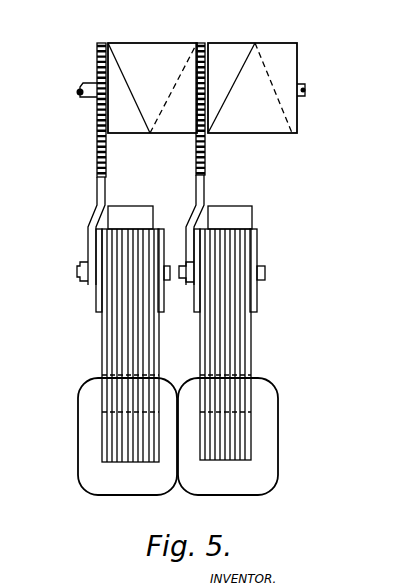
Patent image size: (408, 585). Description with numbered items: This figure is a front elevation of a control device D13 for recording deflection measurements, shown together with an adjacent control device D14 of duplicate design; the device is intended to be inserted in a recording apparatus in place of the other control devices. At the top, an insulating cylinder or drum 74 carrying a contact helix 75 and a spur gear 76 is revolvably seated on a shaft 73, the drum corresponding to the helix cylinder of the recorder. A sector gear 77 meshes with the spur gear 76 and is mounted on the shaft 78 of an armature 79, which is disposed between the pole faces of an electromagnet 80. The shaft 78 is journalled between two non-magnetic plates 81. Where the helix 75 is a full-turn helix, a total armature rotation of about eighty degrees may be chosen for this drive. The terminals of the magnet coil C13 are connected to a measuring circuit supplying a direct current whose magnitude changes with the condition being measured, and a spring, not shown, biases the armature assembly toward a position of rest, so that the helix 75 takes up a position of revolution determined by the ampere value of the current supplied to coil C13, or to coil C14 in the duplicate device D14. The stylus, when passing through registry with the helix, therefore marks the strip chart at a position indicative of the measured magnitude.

The shaft 73 is at (88, 82).
The insulating cylinder or drum 74 is at (148, 48).
The contact helix 75 is at (128, 78).
The spur gear 76 is at (97, 107).
The sector gear 77 is at (105, 181).
The shaft 78 is at (77, 271).
The armature 79 is at (128, 211).
The electromagnet 80 is at (116, 338).
The non-magnetic plates 81 is at (98, 305).
The magnet coil C13 is at (93, 437).
The magnet coil C14 is at (284, 436).
The control device D13 is at (50, 317).
The control device D14 is at (302, 320).